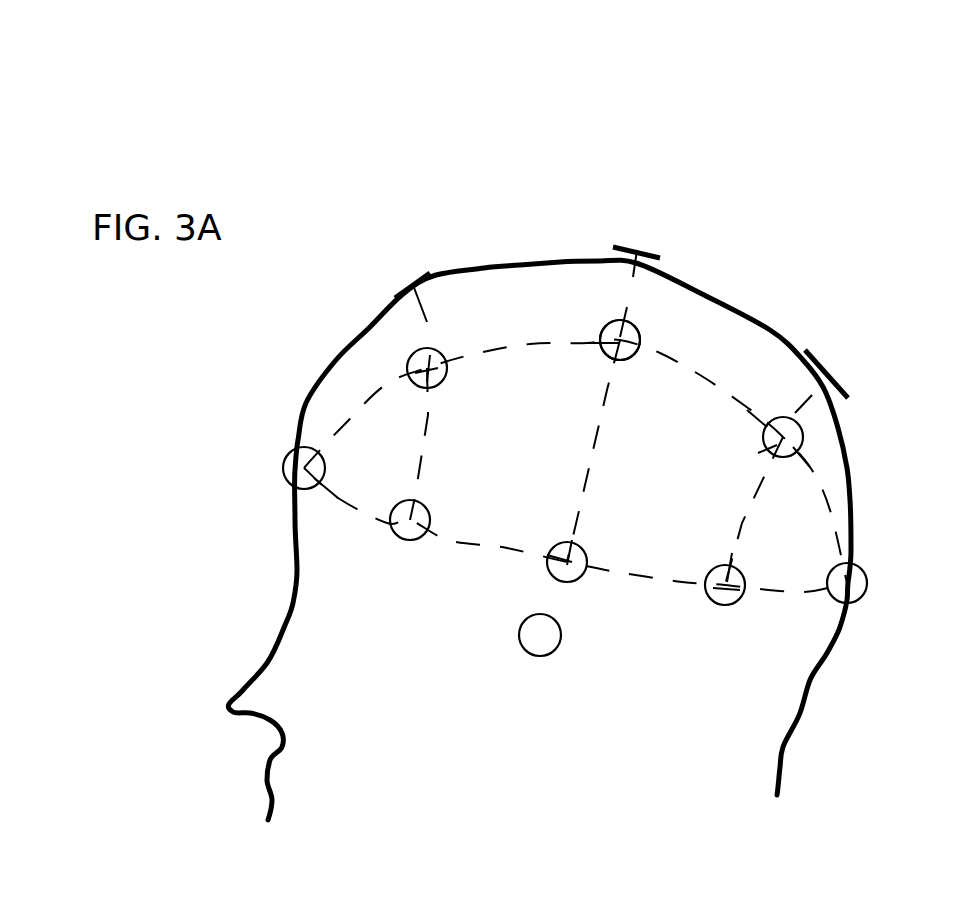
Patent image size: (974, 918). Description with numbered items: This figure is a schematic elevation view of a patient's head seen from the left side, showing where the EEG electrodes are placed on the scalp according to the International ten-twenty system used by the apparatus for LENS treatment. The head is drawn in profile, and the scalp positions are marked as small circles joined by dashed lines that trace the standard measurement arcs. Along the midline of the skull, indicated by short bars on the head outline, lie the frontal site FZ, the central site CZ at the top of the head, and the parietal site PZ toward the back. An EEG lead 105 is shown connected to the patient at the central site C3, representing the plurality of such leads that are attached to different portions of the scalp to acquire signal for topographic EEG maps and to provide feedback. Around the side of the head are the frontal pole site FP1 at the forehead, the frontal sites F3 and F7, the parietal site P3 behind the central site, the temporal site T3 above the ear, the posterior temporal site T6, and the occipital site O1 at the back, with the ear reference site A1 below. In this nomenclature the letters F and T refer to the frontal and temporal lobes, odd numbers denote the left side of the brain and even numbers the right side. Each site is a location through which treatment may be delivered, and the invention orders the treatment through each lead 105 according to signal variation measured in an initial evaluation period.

The EEG lead 105 is at (612, 335).
The FZ electrode site FZ is at (412, 281).
The CZ electrode site CZ is at (641, 232).
The PZ electrode site PZ is at (823, 377).
The FP1 electrode site FP1 is at (260, 468).
The F3 electrode site F3 is at (455, 390).
The F7 electrode site F7 is at (421, 545).
The C3 electrode site C3 is at (625, 367).
The P3 electrode site P3 is at (768, 447).
The T3 electrode site T3 is at (569, 596).
The T6 electrode site T6 is at (729, 616).
The O1 electrode site O1 is at (871, 570).
The A1 electrode site A1 is at (554, 657).